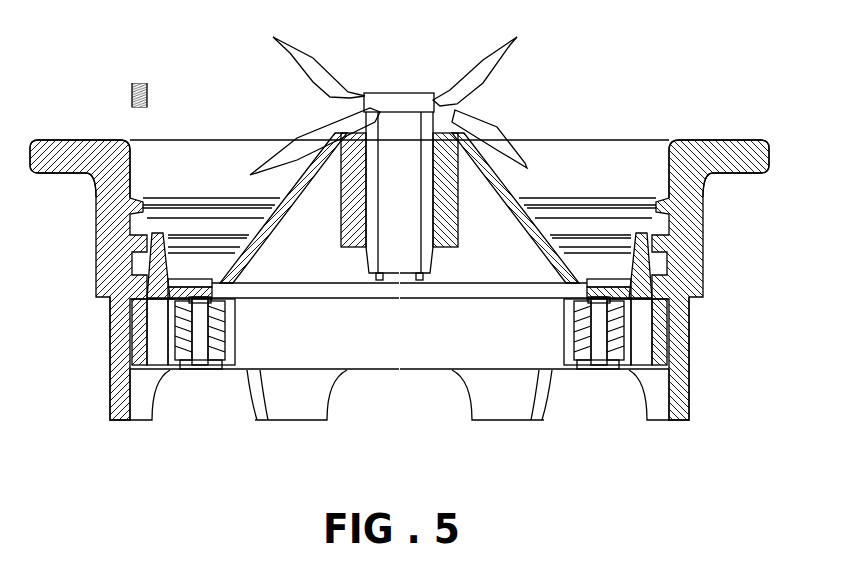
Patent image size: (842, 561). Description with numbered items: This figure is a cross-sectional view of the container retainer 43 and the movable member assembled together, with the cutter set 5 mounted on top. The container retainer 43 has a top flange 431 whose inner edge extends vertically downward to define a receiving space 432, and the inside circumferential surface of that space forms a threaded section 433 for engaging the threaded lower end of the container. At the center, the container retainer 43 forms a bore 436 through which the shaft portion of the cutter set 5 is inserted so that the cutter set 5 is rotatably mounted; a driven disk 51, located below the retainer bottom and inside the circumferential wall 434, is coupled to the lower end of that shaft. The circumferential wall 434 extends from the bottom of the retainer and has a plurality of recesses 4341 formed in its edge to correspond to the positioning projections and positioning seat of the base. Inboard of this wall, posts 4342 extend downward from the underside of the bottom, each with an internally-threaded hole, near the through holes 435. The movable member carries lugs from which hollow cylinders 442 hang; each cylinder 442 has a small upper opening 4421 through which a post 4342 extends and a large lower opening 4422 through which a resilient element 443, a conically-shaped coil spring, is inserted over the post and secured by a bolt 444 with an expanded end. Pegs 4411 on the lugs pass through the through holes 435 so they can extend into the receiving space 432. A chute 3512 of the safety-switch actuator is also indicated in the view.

The cutter set 5 is at (481, 50).
The bore 436 is at (468, 135).
The receiving space 432 is at (580, 163).
The container retainer 43 is at (688, 107).
The top flange 431 is at (730, 137).
The threaded section 433 is at (660, 192).
The peg 4411 is at (663, 242).
The through hole 435 is at (663, 278).
The post 4342 is at (667, 308).
The chute 3512 is at (663, 332).
The hollow cylinder 442 is at (630, 347).
The circumferential wall 434 is at (693, 378).
The resilient element 443 is at (623, 370).
The bolt 444 is at (583, 370).
The recess 4341 is at (397, 393).
The driven disk 51 is at (342, 290).
The lower opening 4422 is at (228, 372).
The upper opening 4421 is at (175, 316).